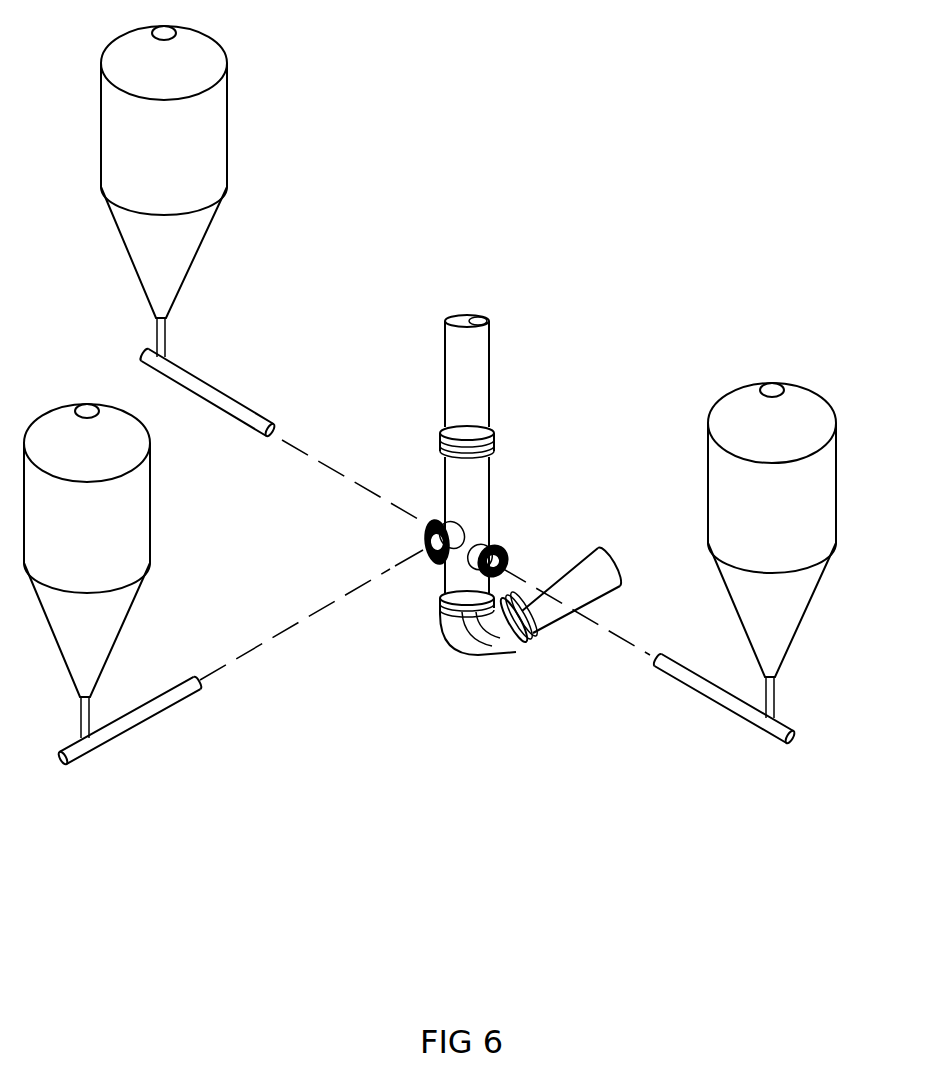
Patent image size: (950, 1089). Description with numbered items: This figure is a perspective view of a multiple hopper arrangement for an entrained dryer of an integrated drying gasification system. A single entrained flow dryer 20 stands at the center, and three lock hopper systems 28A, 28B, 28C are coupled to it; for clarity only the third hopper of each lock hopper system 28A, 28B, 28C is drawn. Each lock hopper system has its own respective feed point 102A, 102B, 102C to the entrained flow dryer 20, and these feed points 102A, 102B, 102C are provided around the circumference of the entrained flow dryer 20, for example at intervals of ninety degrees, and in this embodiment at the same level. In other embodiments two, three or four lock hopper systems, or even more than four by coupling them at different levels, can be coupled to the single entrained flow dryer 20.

The entrained flow dryer 20 is at (482, 347).
The lock hopper system 28A is at (742, 353).
The lock hopper system 28B is at (190, 785).
The lock hopper system 28C is at (262, 233).
The feed point 102A is at (510, 553).
The feed point 102B is at (415, 562).
The feed point 102C is at (425, 512).